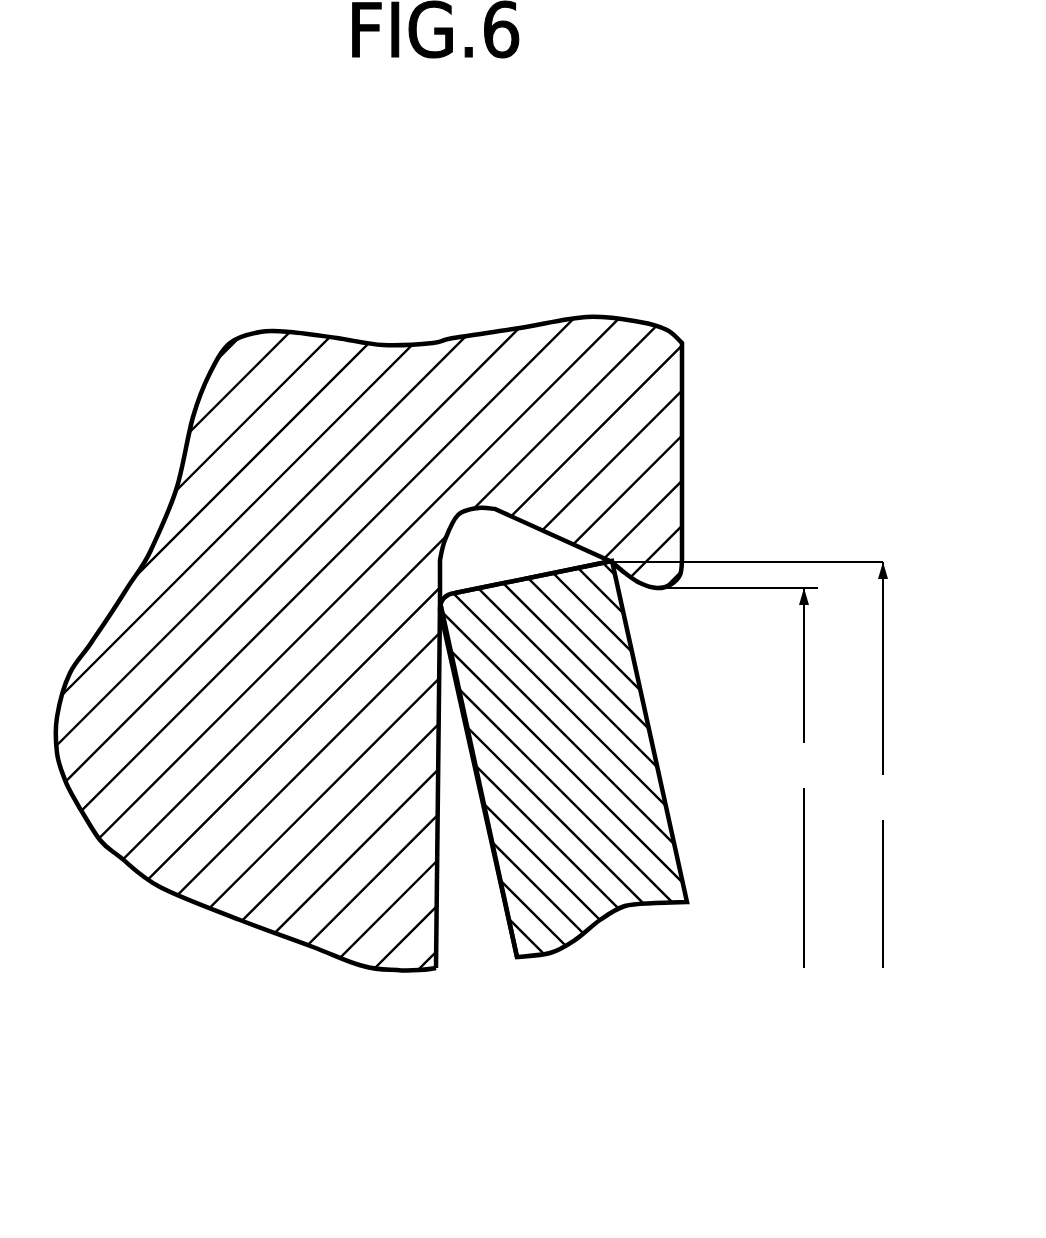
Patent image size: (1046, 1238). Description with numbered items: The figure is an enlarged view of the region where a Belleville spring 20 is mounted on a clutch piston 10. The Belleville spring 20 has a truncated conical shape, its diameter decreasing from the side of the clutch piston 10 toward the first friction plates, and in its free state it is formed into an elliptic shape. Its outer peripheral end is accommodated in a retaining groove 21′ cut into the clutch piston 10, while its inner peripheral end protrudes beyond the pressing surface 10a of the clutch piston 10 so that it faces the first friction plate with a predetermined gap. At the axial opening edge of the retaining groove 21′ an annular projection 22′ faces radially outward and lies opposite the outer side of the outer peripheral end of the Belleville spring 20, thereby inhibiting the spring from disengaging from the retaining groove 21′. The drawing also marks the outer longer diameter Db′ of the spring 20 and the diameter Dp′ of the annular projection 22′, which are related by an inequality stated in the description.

The clutch piston 10 is at (245, 888).
The pressing surface 10a is at (438, 917).
The Belleville spring 20 is at (628, 800).
The retaining groove 21′ is at (437, 772).
The annular projection 22′ is at (656, 590).
The diameter of the annular projection Dp′ is at (840, 744).
The outer longer diameter of the spring Db′ is at (911, 777).